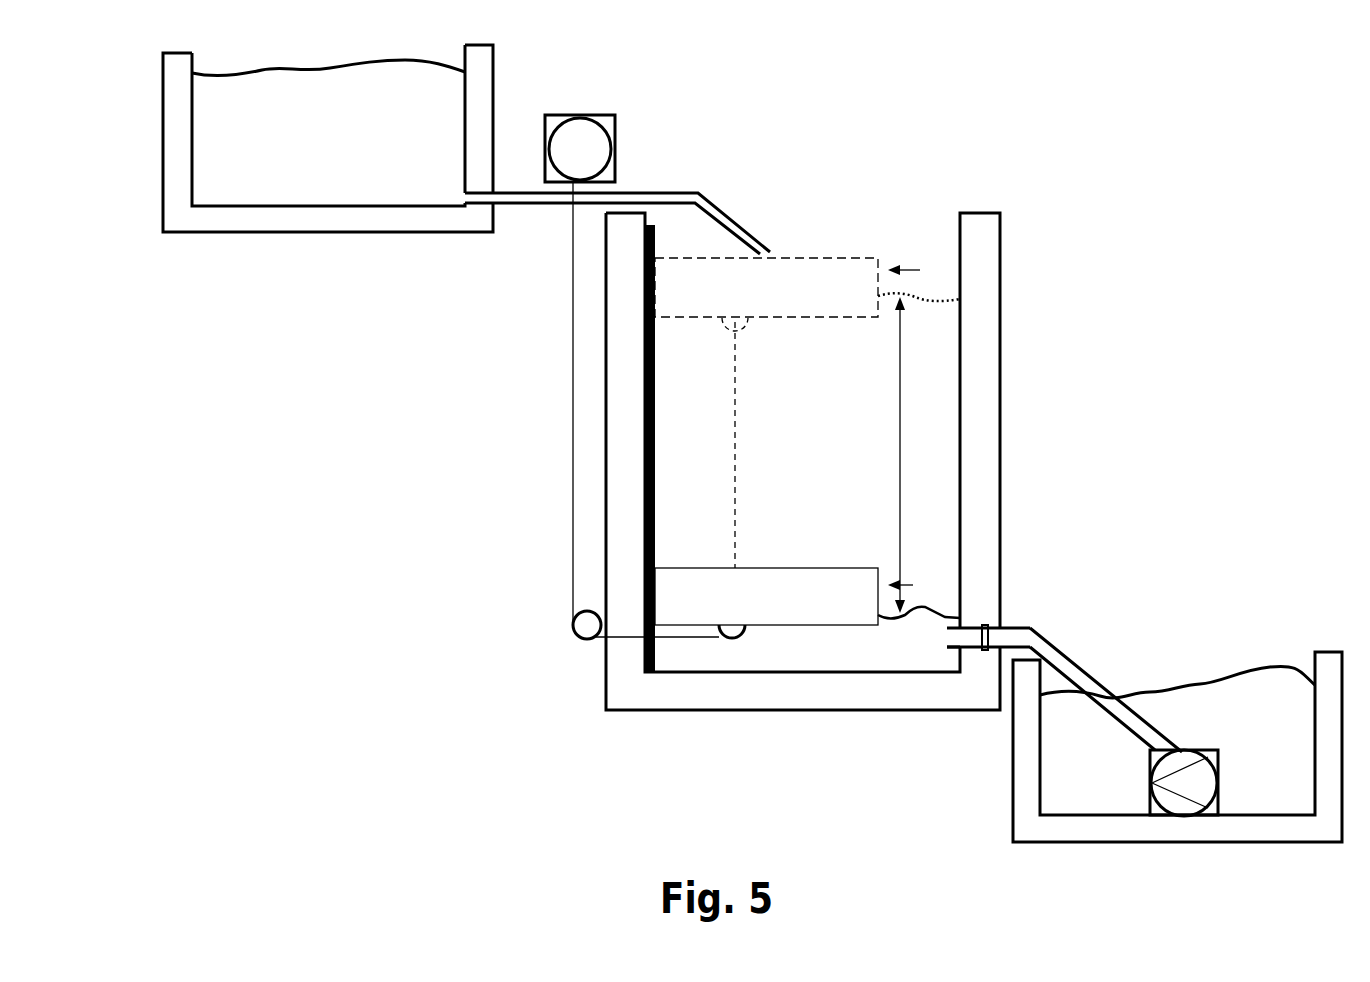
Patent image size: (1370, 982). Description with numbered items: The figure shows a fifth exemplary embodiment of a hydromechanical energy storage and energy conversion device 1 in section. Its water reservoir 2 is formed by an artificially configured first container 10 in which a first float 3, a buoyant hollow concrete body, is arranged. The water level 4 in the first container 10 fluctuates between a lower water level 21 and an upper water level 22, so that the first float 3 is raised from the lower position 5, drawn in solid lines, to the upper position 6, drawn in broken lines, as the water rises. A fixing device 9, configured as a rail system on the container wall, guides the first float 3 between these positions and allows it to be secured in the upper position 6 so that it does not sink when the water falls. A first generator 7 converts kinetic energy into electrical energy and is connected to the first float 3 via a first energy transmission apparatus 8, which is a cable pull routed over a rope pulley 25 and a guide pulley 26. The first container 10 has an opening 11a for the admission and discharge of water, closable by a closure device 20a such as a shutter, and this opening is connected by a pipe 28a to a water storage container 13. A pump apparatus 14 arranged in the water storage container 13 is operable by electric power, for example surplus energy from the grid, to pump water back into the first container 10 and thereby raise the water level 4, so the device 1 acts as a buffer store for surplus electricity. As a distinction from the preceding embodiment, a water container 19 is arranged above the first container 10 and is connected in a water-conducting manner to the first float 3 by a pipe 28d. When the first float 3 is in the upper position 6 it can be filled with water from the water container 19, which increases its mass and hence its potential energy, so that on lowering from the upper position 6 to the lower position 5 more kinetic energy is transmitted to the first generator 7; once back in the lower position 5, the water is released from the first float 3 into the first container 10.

The hydromechanical energy storage and energy conversion device 1 is at (696, 47).
The water container 19 is at (163, 120).
The first generator 7 is at (616, 150).
The pipe 28d is at (698, 190).
The first energy transmission apparatus 8 is at (573, 440).
The guide pulley 26 is at (583, 612).
The water reservoir 2 is at (856, 461).
The first container 10 is at (1002, 325).
The fixing device 9 is at (655, 382).
The first float 3 is at (840, 258).
The rope pulley 25 is at (748, 323).
The upper position 6 is at (914, 272).
The lower position 5 is at (911, 587).
The water level 4 is at (900, 475).
The upper water level 22 is at (928, 302).
The lower water level 21 is at (900, 620).
The opening 11a is at (948, 645).
The closure device 20a is at (1000, 627).
The pipe 28a is at (1085, 660).
The water storage container 13 is at (1013, 787).
The pump apparatus 14 is at (1218, 782).